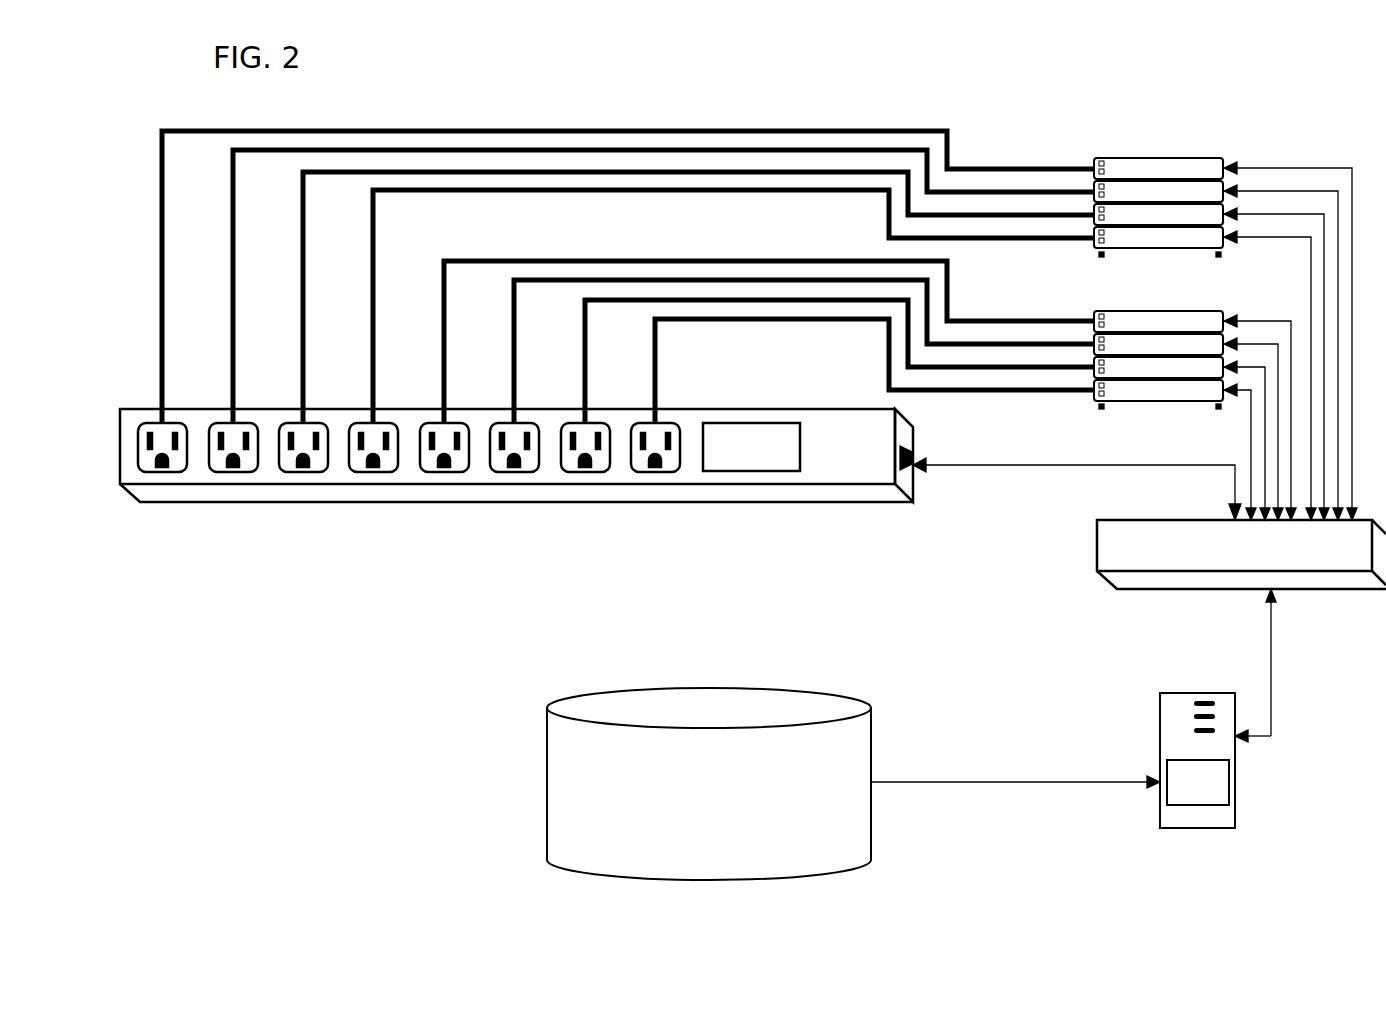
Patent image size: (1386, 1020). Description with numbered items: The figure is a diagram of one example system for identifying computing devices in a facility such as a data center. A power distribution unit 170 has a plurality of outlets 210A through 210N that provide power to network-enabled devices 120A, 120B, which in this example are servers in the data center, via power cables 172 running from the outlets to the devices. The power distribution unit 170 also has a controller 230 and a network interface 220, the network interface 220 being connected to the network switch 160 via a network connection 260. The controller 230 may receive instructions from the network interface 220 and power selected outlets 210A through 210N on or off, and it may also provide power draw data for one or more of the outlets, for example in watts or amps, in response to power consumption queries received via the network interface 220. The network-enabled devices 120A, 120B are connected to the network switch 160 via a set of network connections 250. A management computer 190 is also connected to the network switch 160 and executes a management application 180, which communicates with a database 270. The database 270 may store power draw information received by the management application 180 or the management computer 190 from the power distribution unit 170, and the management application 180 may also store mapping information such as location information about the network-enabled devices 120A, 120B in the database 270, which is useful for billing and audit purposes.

The network-enabled device 120A is at (1128, 157).
The network-enabled device 120B is at (1131, 311).
The network switch 160 is at (1127, 591).
The power distribution unit 170 is at (770, 502).
The power cables 172 is at (540, 131).
The management application 180 is at (1198, 782).
The management computer 190 is at (1162, 784).
The outlet 210A is at (163, 473).
The outlet 210N is at (637, 473).
The network interface 220 is at (913, 475).
The controller 230 is at (750, 421).
The network connections 250 is at (1282, 168).
The network connection 260 is at (990, 465).
The database 270 is at (732, 812).